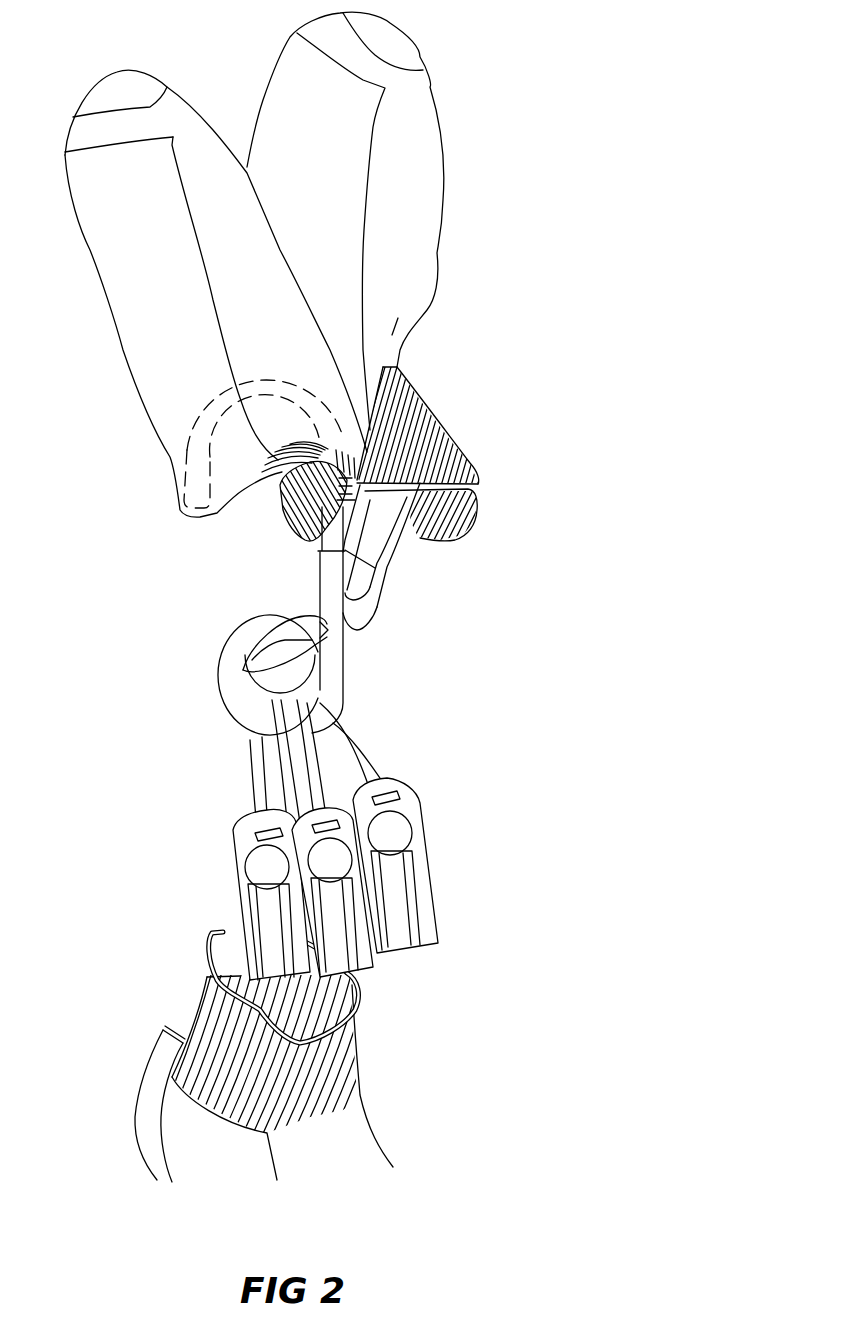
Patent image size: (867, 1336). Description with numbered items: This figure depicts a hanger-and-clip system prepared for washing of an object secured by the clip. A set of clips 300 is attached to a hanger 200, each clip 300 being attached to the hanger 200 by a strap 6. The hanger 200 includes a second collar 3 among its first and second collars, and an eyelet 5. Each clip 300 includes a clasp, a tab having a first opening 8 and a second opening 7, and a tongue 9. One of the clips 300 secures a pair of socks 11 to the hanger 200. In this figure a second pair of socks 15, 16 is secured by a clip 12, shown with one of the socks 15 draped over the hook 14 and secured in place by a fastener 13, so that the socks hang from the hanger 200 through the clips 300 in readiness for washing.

The second collar 3 is at (333, 528).
The eyelet 5 is at (330, 675).
The strap 6 is at (367, 750).
The second opening 7 is at (387, 792).
The first opening 8 is at (390, 835).
The tongue 9 is at (397, 913).
The pair of socks 11 is at (343, 1140).
The clip 12 is at (360, 605).
The fastener 13 is at (280, 502).
The hook 14 is at (193, 453).
The sock 15 is at (183, 367).
The sock 16 is at (370, 275).
The hanger 200 is at (303, 585).
The set of clips 300 is at (293, 874).